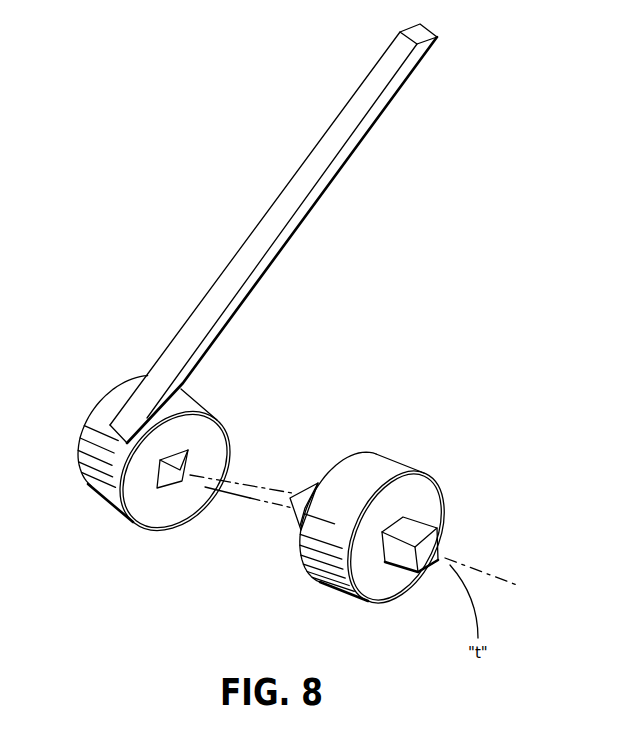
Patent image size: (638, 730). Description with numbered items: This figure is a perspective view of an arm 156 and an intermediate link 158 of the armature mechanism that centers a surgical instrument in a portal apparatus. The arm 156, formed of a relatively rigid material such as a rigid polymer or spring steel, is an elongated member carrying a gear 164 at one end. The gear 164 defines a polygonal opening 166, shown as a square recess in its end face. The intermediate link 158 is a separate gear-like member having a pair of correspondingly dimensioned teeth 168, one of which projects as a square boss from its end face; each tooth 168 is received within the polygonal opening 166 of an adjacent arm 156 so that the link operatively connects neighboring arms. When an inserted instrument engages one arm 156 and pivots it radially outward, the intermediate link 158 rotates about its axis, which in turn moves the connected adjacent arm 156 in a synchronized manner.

The arm 156 is at (323, 188).
The intermediate link 158 is at (363, 475).
The gear 164 is at (103, 472).
The polygonal opening 166 is at (167, 474).
The tooth 168 is at (435, 542).